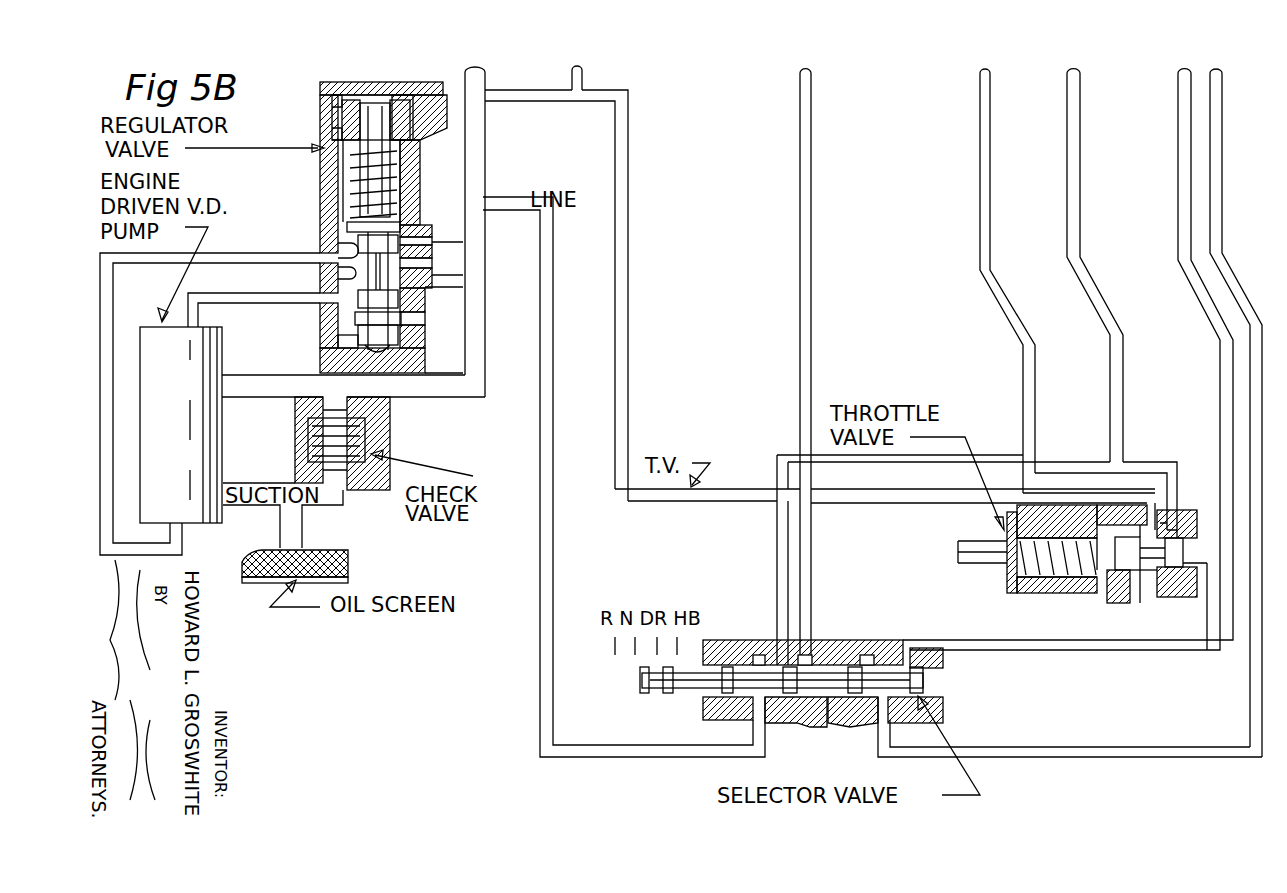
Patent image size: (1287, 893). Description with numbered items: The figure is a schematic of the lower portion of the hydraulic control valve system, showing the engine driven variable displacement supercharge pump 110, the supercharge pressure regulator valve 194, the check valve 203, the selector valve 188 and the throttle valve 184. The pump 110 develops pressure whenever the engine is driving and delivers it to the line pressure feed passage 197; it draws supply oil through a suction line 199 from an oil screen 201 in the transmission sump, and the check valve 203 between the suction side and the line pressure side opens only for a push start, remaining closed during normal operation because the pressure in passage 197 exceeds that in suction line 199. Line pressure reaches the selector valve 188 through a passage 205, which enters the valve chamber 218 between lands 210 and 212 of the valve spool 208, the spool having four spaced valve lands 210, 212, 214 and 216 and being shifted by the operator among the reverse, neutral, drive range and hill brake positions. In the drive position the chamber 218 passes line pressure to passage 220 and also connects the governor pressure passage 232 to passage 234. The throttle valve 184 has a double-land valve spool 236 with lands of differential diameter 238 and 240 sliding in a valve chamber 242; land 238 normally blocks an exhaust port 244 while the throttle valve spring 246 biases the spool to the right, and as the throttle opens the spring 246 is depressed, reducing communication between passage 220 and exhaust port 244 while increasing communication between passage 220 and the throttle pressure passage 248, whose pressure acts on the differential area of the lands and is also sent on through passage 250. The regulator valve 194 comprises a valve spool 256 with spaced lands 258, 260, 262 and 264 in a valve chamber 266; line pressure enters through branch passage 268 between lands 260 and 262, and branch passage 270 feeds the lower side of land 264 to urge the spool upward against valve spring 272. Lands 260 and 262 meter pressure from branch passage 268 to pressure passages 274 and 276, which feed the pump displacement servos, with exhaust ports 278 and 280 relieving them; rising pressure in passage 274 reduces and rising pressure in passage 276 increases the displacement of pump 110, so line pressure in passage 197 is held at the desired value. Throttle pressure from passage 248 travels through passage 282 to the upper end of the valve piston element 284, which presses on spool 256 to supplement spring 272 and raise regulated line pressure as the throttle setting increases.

The variable displacement supercharge pump 110 is at (205, 450).
The throttle valve 184 is at (1016, 595).
The selector valve 188 is at (725, 660).
The supercharge pressure regulator valve 194 is at (415, 192).
The line pressure feed passage 197 is at (487, 82).
The suction line 199 is at (343, 508).
The oil screen 201 is at (345, 565).
The check valve 203 is at (380, 440).
The passage 205 is at (630, 727).
The valve spool 208 is at (820, 660).
The valve land 210 is at (722, 705).
The valve land 212 is at (795, 708).
The valve land 214 is at (852, 710).
The valve land 216 is at (945, 620).
The valve chamber 218 is at (875, 660).
The line pressure passage 220 is at (1080, 87).
The governor pressure passage 232 is at (1222, 117).
The passage 234 is at (1178, 117).
The double-land valve spool 236 is at (1148, 560).
The valve land 238 is at (1128, 538).
The valve land 240 is at (1175, 562).
The valve chamber 242 is at (1190, 560).
The exhaust port 244 is at (1130, 597).
The throttle valve spring 246 is at (1088, 560).
The throttle pressure passage 248 is at (1063, 495).
The passage 250 is at (990, 85).
The valve spool 256 is at (400, 280).
The valve land 258 is at (400, 227).
The valve land 260 is at (338, 250).
The valve land 262 is at (340, 278).
The valve land 264 is at (345, 340).
The valve chamber 266 is at (330, 278).
The branch passage 268 is at (440, 296).
The branch passage 270 is at (425, 328).
The valve spring 272 is at (400, 170).
The pressure passage 274 is at (125, 263).
The pressure passage 276 is at (240, 280).
The exhaust port 278 is at (430, 248).
The exhaust port 280 is at (358, 320).
The passage 282 is at (582, 72).
The valve piston element 284 is at (365, 110).